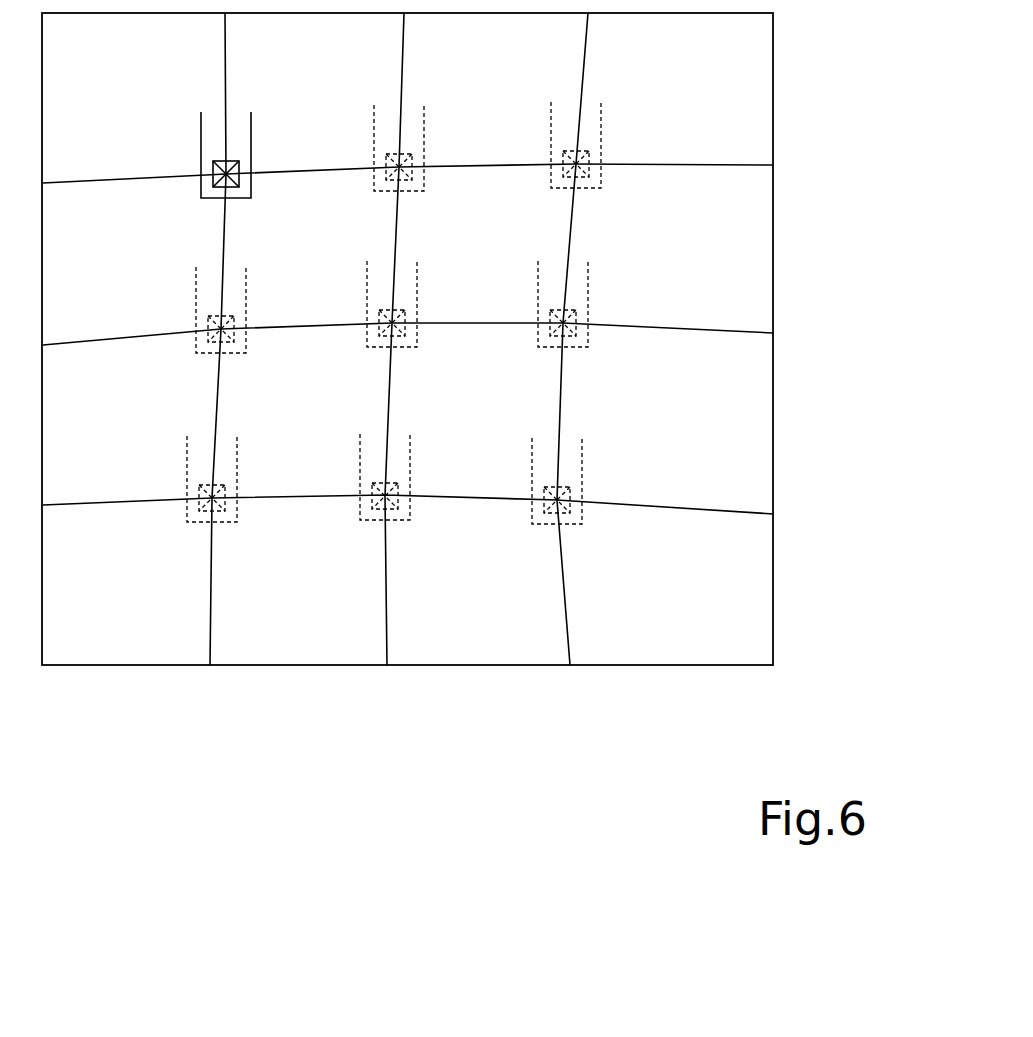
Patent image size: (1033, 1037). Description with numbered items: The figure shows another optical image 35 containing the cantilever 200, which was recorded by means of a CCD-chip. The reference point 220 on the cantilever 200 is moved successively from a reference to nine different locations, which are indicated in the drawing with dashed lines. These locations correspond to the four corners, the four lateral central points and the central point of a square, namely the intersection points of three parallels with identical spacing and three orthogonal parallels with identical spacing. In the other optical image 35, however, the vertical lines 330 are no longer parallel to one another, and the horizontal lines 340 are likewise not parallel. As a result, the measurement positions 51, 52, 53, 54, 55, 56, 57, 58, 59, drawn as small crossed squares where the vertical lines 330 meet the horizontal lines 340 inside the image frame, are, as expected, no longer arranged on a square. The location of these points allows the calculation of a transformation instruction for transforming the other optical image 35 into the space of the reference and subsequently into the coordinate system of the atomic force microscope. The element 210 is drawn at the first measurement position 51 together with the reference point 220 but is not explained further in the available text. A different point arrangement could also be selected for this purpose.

The other optical image 35 is at (775, 48).
The vertical lines 330 is at (227, 42).
The horizontal lines 340 is at (713, 137).
The cantilever 200 is at (198, 127).
The sensor pad 210 is at (240, 163).
The reference point 220 is at (228, 173).
The measurement position 51 is at (210, 159).
The measurement position 52 is at (388, 179).
The measurement position 53 is at (570, 174).
The measurement position 54 is at (214, 339).
The measurement position 55 is at (385, 334).
The measurement position 56 is at (560, 333).
The measurement position 57 is at (210, 504).
The measurement position 58 is at (382, 502).
The measurement position 59 is at (555, 505).